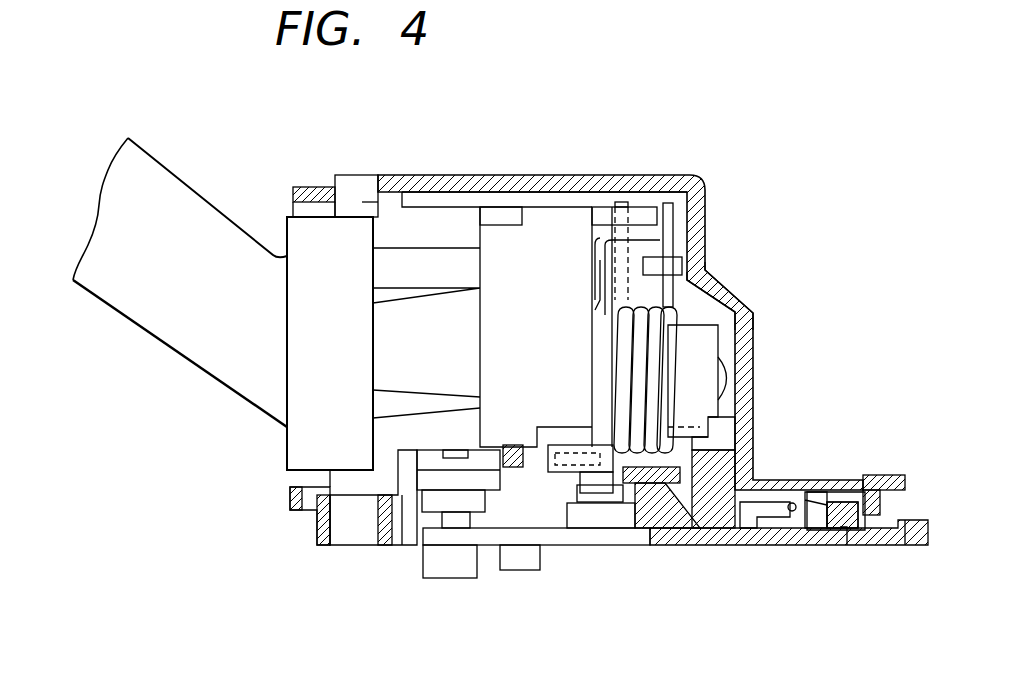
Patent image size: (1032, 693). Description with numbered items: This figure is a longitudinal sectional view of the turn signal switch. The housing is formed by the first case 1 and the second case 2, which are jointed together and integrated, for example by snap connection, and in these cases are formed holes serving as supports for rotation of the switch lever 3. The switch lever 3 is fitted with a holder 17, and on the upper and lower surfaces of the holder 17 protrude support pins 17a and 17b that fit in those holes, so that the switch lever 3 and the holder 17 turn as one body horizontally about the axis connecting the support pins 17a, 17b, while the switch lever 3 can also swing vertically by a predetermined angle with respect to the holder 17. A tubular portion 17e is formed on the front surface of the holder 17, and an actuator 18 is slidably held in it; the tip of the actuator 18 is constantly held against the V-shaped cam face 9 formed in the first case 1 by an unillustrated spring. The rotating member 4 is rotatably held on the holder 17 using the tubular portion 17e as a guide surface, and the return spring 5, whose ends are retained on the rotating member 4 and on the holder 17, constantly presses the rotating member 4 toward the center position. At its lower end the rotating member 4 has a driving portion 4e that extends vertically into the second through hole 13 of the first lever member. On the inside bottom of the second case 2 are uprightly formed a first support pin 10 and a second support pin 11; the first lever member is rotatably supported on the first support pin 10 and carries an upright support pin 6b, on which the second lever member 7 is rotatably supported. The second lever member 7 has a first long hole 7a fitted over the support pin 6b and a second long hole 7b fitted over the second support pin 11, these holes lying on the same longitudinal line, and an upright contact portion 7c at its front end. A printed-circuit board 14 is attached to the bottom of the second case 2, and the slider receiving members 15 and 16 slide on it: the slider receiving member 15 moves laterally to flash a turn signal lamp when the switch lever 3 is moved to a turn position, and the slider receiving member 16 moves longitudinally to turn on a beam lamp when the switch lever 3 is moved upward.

The first case 1 is at (620, 304).
The second case 2 is at (777, 553).
The switch lever 3 is at (225, 208).
The rotating member 4 is at (605, 267).
The driving portion 4e is at (565, 465).
The return spring 5 is at (670, 314).
The support pin 6b is at (818, 508).
The second lever member 7 is at (723, 480).
The first long hole 7a is at (818, 512).
The second long hole 7b is at (733, 518).
The contact portion 7c is at (892, 473).
The cam face 9 is at (757, 338).
The first support pin 10 is at (627, 462).
The second support pin 11 is at (770, 513).
The second through hole 13 is at (540, 463).
The printed-circuit board 14 is at (450, 545).
The slider receiving member 15 is at (627, 522).
The slider receiving member 16 is at (445, 480).
The holder 17 is at (500, 240).
The support pin 17a is at (357, 185).
The support pin 17b is at (345, 513).
The tubular portion 17e is at (700, 338).
The actuator 18 is at (757, 390).